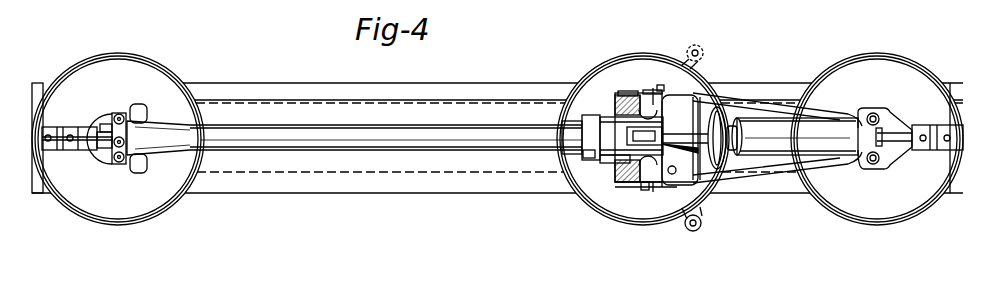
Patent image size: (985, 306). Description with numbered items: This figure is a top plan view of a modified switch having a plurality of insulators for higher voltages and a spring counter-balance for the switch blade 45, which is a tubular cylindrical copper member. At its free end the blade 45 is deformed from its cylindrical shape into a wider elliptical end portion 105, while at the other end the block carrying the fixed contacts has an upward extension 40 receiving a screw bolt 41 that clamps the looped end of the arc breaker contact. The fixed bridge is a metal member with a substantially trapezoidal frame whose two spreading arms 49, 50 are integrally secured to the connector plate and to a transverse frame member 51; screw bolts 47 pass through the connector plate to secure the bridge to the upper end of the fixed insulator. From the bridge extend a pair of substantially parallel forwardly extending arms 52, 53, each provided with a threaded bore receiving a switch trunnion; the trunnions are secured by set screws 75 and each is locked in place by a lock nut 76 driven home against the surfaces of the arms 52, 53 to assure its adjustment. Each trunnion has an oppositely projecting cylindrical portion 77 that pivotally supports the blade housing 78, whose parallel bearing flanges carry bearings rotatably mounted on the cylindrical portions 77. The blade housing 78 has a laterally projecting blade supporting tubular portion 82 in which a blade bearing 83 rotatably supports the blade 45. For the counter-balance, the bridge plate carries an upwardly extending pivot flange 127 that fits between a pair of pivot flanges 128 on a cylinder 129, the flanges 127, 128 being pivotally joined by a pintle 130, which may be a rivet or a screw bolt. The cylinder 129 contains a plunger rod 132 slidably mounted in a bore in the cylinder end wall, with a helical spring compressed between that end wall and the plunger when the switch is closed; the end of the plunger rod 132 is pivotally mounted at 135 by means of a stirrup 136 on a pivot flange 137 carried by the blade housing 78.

The upward extension 40 is at (97, 148).
The screw bolt 41 is at (105, 126).
The blade 45 is at (435, 128).
The screw bolts 47 is at (880, 118).
The spreading arm 49 is at (745, 97).
The spreading arm 50 is at (762, 176).
The transverse frame member 51 is at (700, 120).
The forwardly extending arm 52 is at (628, 95).
The forwardly extending arm 53 is at (680, 181).
The set screws 75 is at (652, 100).
The lock nut 76 is at (662, 90).
The cylindrical portion 77 is at (663, 107).
The blade housing 78 is at (632, 118).
The blade supporting tubular portion 82 is at (602, 162).
The blade bearing 83 is at (587, 153).
The elliptical end portion 105 is at (151, 124).
The pivot flange 127 is at (878, 141).
The pivot flanges 128 is at (882, 133).
The cylinder 129 is at (820, 130).
The pintle 130 is at (863, 108).
The plunger rod 132 is at (725, 157).
The pivotal mounting 135 is at (580, 118).
The stirrup 136 is at (583, 137).
The pivot flange 137 is at (627, 137).